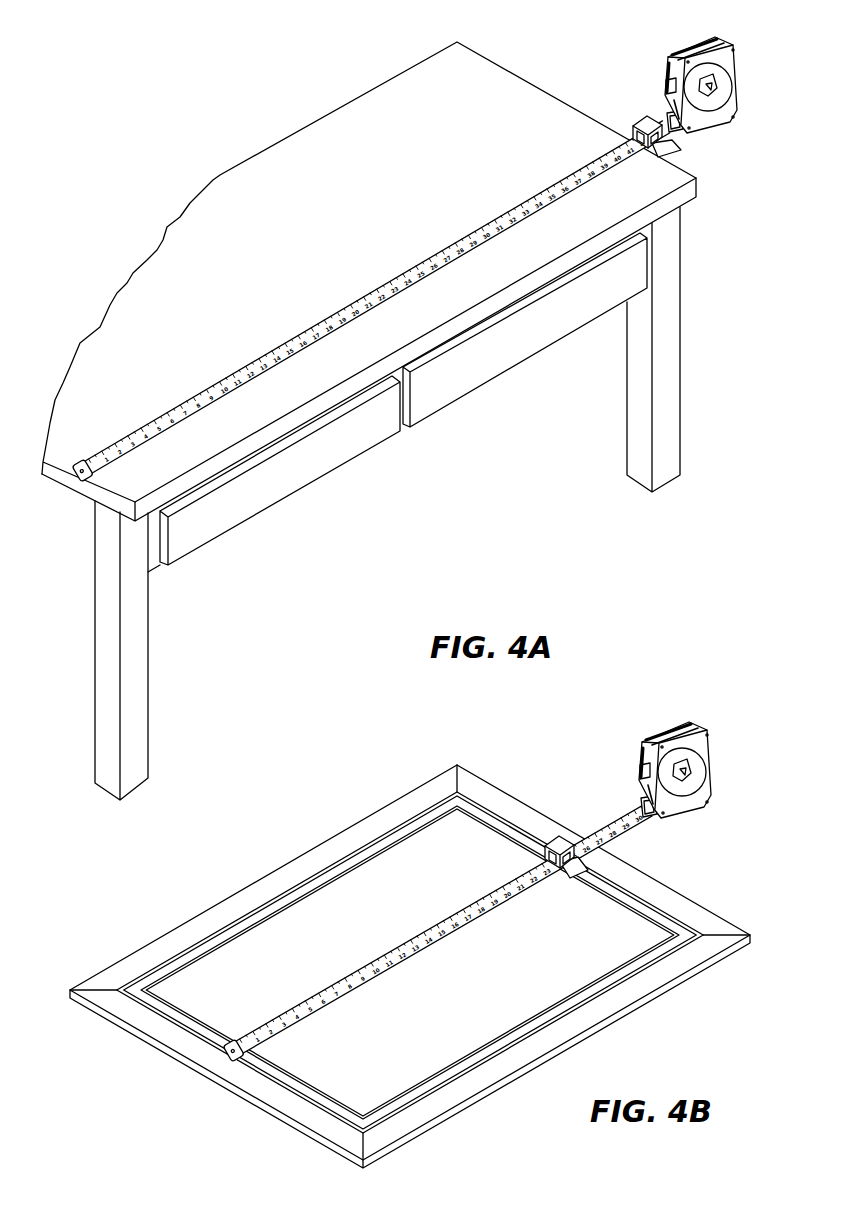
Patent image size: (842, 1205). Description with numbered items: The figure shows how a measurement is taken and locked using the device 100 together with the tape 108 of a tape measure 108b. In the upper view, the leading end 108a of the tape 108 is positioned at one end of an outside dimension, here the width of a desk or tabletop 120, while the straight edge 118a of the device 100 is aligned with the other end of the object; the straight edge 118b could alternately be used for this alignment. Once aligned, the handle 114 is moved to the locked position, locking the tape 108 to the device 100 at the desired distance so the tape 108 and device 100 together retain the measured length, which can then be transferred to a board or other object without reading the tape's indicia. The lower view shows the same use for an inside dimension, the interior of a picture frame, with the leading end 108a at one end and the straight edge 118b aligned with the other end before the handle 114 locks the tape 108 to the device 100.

In FIG. 4A, the device 100 is at (632, 118).
In FIG. 4B, the device 100 is at (548, 832).
In FIG. 4A, the tape 108 is at (307, 333).
In FIG. 4B, the tape 108 is at (392, 950).
In FIG. 4A, the leading end 108a is at (77, 478).
In FIG. 4B, the leading end 108a is at (224, 1052).
In FIG. 4A, the tape measure 108b is at (735, 85).
In FIG. 4B, the tape measure 108b is at (716, 748).
In FIG. 4A, the handle 114 is at (685, 134).
In FIG. 4B, the handle 114 is at (561, 840).
In FIG. 4A, the straight edge 118a is at (656, 160).
In FIG. 4B, the straight edge 118b is at (592, 866).
In FIG. 4A, the tabletop 120 is at (331, 237).